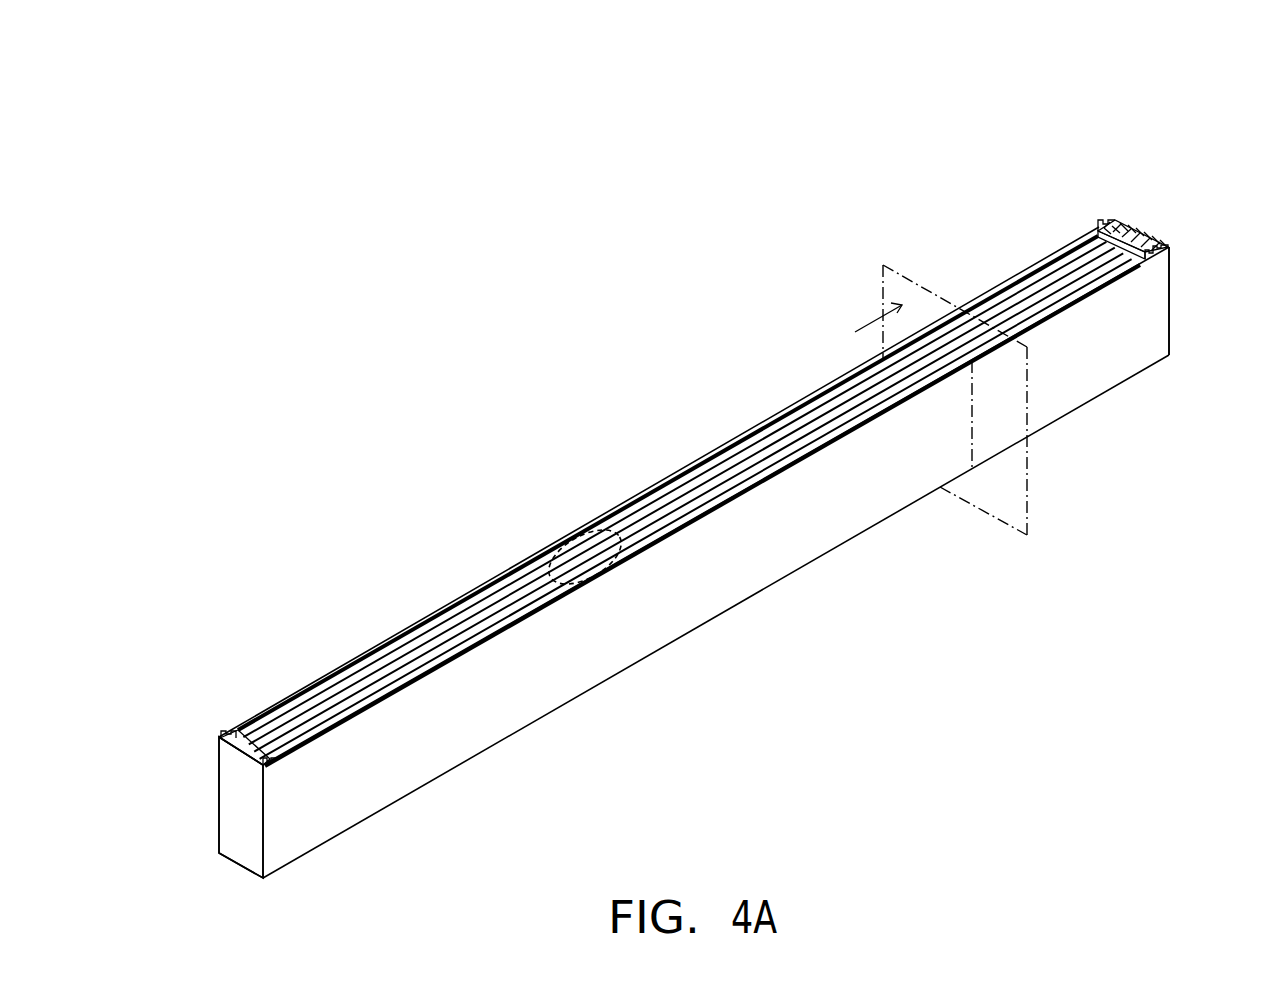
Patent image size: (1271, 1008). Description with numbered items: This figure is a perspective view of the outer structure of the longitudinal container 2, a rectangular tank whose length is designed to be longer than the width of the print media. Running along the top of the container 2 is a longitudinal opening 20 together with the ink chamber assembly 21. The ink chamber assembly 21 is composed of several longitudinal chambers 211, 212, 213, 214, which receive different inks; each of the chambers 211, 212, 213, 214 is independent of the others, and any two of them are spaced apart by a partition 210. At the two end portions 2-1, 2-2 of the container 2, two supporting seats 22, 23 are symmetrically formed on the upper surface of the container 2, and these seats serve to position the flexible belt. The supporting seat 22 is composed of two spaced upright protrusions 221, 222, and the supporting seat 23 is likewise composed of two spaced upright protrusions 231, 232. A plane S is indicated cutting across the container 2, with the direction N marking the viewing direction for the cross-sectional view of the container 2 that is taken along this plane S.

The container 2 is at (180, 279).
The end portion 2-1 is at (235, 833).
The end portion 2-2 is at (1171, 323).
The longitudinal opening 20 is at (610, 583).
The ink chamber assembly 21 is at (514, 502).
The partition 210 is at (635, 543).
The longitudinal chamber 211 is at (532, 602).
The longitudinal chamber 212 is at (490, 616).
The longitudinal chamber 213 is at (428, 641).
The longitudinal chamber 214 is at (367, 666).
The supporting seat 22 is at (302, 636).
The upright protrusion 221 is at (268, 757).
The upright protrusion 222 is at (225, 730).
The supporting seat 23 is at (1182, 129).
The second connector terminal 231 is at (1149, 248).
The second connector terminal 232 is at (1099, 222).
The plane S is at (885, 265).
The direction N is at (864, 329).